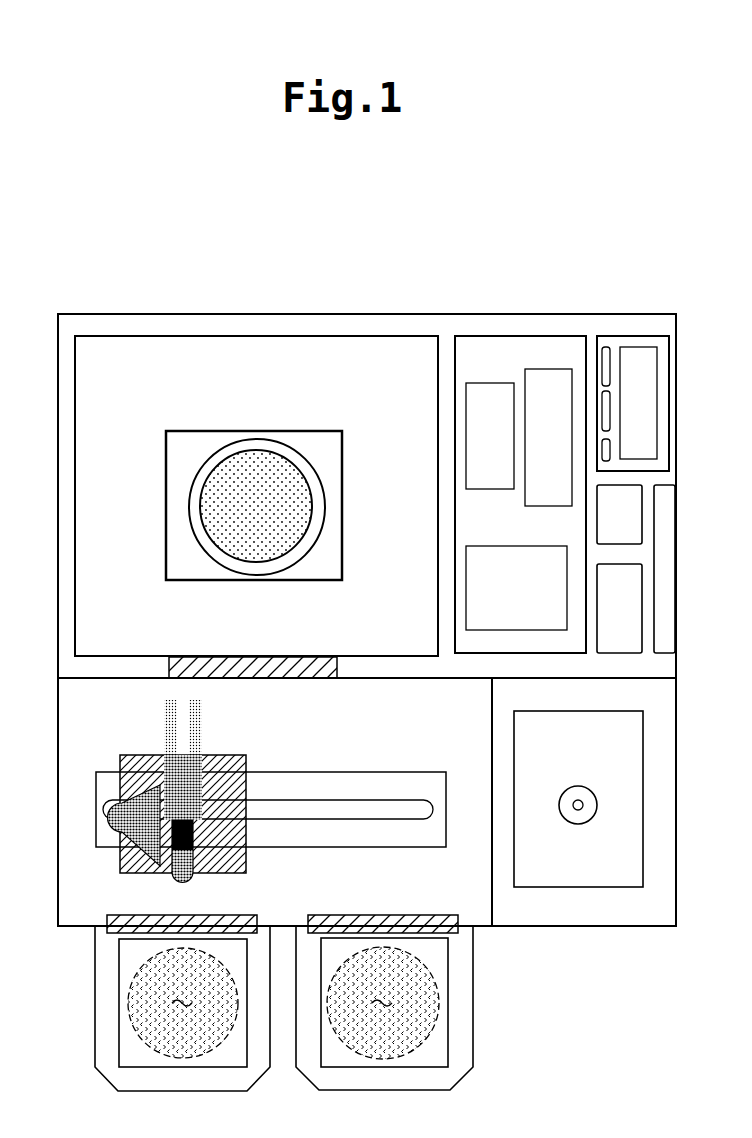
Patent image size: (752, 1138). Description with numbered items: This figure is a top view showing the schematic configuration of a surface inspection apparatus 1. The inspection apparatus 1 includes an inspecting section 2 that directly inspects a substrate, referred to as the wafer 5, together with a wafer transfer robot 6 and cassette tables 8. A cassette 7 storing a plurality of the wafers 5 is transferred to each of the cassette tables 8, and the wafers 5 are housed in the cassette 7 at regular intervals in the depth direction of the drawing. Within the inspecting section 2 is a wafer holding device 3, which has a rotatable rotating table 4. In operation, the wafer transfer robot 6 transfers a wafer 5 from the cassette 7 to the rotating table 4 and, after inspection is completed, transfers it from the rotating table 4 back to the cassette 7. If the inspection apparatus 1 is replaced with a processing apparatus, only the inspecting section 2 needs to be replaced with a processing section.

The inspection apparatus 1 is at (417, 298).
The inspecting section 2 is at (75, 462).
The wafer holding device 3 is at (166, 561).
The rotating table 4 is at (217, 561).
The wafer 5 is at (221, 462).
The wafer transfer robot 6 is at (58, 793).
The cassette 7 is at (120, 1028).
The cassette table 8 is at (95, 1060).